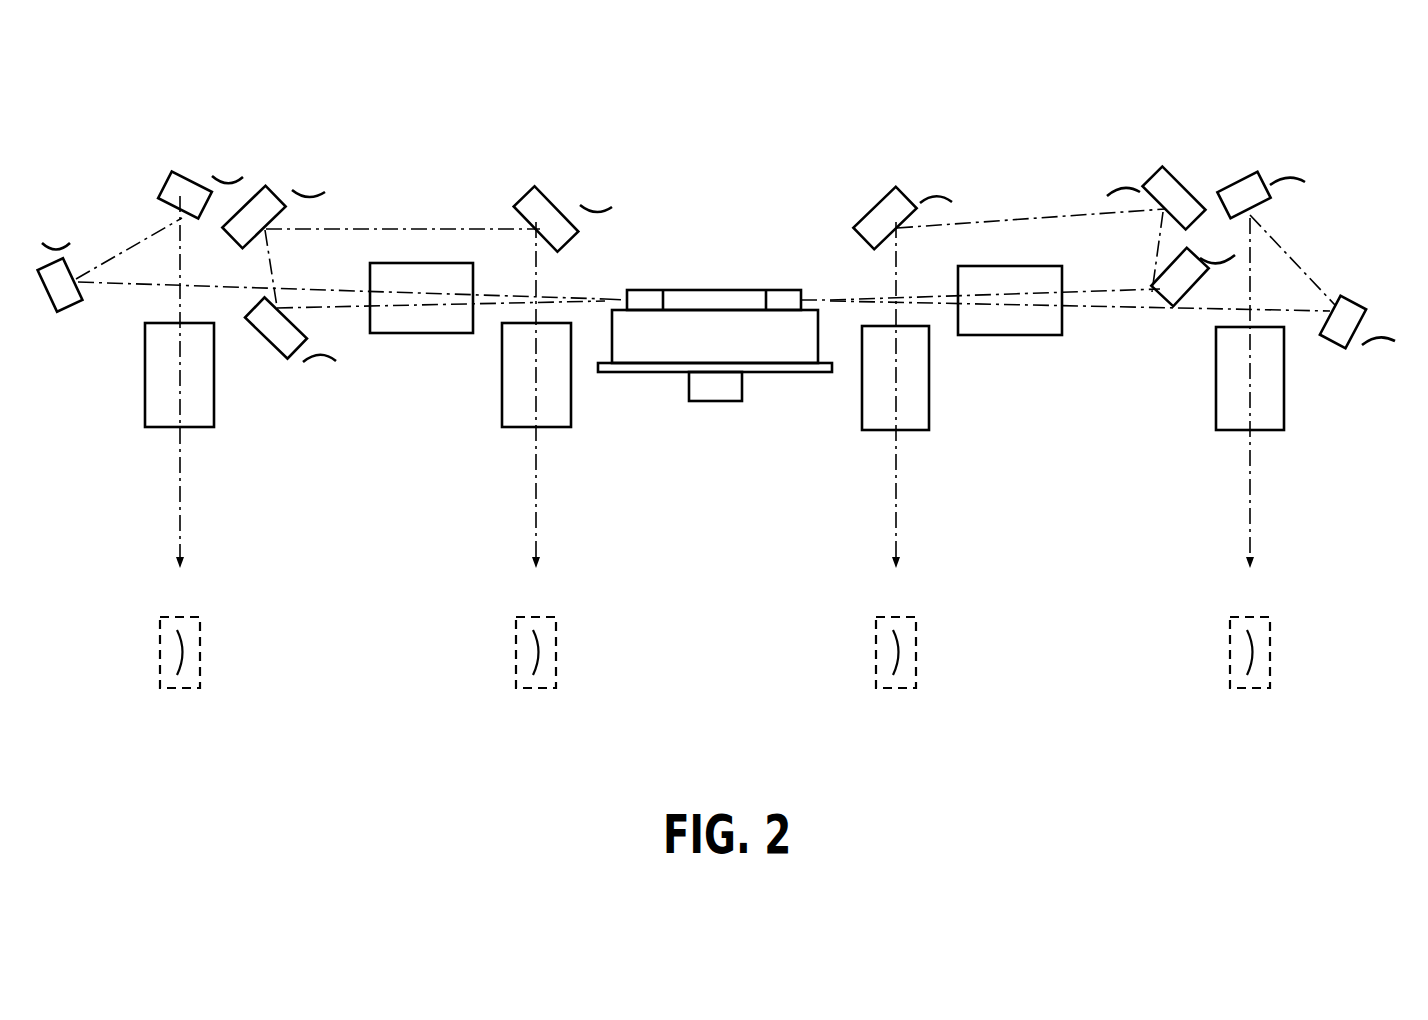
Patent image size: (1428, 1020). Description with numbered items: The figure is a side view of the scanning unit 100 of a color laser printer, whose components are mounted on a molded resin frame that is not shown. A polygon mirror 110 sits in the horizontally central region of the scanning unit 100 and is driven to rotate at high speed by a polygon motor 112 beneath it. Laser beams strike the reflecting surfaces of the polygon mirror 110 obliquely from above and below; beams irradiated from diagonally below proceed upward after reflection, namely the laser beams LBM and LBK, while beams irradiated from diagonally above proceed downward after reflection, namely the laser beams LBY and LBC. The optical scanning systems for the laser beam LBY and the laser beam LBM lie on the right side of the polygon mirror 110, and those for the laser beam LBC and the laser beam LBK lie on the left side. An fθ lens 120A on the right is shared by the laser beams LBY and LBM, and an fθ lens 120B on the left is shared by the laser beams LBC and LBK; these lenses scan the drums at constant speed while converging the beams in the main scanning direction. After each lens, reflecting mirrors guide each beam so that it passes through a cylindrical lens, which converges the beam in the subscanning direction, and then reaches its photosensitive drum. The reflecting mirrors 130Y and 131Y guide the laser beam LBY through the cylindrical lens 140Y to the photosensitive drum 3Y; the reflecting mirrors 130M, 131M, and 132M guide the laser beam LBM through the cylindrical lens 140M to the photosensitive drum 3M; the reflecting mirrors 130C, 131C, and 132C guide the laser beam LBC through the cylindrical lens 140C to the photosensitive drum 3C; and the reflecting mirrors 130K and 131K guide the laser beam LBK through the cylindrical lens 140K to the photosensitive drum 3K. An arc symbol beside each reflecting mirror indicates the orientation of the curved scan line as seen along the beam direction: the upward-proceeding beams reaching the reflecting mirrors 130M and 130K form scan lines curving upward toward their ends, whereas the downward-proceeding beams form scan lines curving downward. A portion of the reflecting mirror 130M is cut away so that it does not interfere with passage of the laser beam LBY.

The scanning unit 100 is at (718, 103).
The polygon mirror 110 is at (752, 290).
The polygon motor 112 is at (772, 373).
The fθ lens 120A is at (1025, 322).
The fθ lens 120B is at (422, 322).
The reflecting mirror 130K is at (68, 293).
The reflecting mirror 130C is at (268, 330).
The reflecting mirror 130M is at (1178, 288).
The reflecting mirror 130Y is at (1347, 316).
The reflecting mirror 131K is at (187, 196).
The reflecting mirror 131C is at (265, 205).
The reflecting mirror 131M is at (1160, 186).
The reflecting mirror 131Y is at (1242, 193).
The reflecting mirror 132C is at (548, 218).
The reflecting mirror 132M is at (885, 218).
The cylindrical lens 140K is at (197, 423).
The cylindrical lens 140C is at (554, 423).
The cylindrical lens 140M is at (913, 415).
The cylindrical lens 140Y is at (1265, 415).
The laser beam LBK is at (122, 244).
The laser beam LBC is at (427, 229).
The laser beam LBM is at (970, 225).
The laser beam LBY is at (1290, 255).
The photosensitive drum 3K is at (178, 631).
The photosensitive drum 3C is at (535, 631).
The photosensitive drum 3M is at (894, 631).
The photosensitive drum 3Y is at (1249, 631).